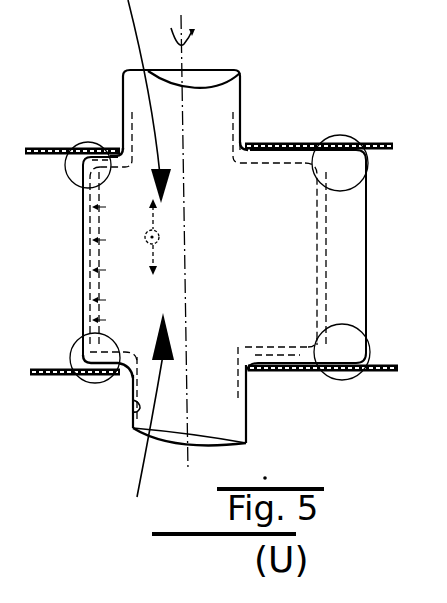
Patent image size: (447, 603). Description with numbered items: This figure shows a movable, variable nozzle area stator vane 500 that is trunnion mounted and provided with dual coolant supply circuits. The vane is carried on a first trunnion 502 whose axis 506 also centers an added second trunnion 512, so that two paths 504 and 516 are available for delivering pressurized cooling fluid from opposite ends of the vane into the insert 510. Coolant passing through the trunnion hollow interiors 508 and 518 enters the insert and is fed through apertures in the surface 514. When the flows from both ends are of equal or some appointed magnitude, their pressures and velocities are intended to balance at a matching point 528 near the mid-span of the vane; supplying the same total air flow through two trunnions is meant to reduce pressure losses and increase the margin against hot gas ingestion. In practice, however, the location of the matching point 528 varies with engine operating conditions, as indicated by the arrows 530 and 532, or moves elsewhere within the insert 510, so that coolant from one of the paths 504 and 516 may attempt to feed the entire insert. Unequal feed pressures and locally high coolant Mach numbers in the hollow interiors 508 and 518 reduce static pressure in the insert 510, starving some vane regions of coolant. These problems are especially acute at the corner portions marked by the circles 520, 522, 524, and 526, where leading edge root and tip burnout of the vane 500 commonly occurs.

The vane 500 is at (367, 197).
The first trunnion 502 is at (245, 118).
The first coolant path 504 is at (138, 25).
The trunnion axis 506 is at (184, 55).
The trunnion hollow interior 508 is at (244, 67).
The insert 510 is at (324, 262).
The second trunnion 512 is at (248, 397).
The surface 514 is at (108, 224).
The second coolant path 516 is at (135, 412).
The trunnion hollow interior 518 is at (140, 446).
The corner portion circle 520 is at (353, 137).
The corner portion circle 522 is at (370, 346).
The corner portion circle 524 is at (75, 345).
The corner portion circle 526 is at (70, 188).
The matching point 528 is at (160, 237).
The arrow 530 is at (154, 260).
The arrow 532 is at (154, 206).